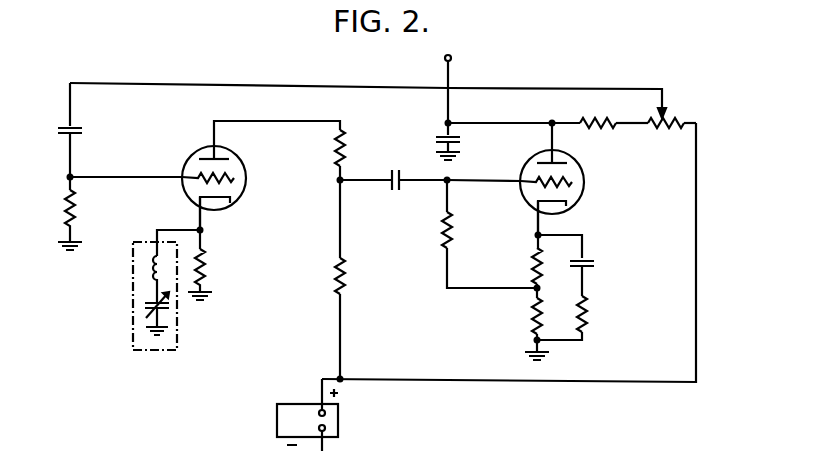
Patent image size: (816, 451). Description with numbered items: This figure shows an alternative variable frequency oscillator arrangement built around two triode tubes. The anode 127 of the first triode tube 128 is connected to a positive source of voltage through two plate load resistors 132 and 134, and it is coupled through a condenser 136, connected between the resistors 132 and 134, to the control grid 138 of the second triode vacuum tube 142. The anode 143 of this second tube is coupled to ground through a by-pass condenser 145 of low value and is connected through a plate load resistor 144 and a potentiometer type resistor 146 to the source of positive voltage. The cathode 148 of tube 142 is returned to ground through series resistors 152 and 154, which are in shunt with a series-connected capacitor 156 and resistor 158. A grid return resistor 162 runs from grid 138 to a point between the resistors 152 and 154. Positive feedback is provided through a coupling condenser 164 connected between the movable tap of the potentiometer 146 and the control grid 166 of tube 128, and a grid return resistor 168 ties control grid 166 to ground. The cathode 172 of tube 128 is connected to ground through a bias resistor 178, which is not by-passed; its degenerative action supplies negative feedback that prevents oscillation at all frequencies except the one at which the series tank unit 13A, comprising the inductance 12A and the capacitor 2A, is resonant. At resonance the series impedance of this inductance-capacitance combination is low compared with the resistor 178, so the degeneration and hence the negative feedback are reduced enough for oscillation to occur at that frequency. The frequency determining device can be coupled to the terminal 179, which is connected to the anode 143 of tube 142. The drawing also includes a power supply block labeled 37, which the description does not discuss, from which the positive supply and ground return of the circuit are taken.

The terminal 179 is at (452, 55).
The coupling condenser 164 is at (85, 131).
The grid return resistor 168 is at (78, 208).
The triode tube 128 is at (247, 178).
The anode 127 is at (221, 157).
The control grid 166 is at (197, 177).
The cathode 172 is at (220, 200).
The bias resistor 178 is at (206, 272).
The series tank unit 13A is at (131, 341).
The inductance 12A is at (150, 270).
The capacitor 2A is at (145, 306).
The plate load resistor 132 is at (346, 140).
The plate load resistor 134 is at (345, 268).
The condenser 136 is at (392, 196).
The by-pass condenser 145 is at (437, 141).
The grid return resistor 162 is at (452, 226).
The plate load resistor 144 is at (598, 121).
The potentiometer type resistor 146 is at (670, 130).
The triode vacuum tube 142 is at (585, 181).
The anode 143 is at (568, 163).
The control grid 138 is at (540, 181).
The cathode 148 is at (565, 204).
The resistor 152 is at (534, 258).
The resistor 154 is at (533, 306).
The capacitor 156 is at (596, 266).
The resistor 158 is at (588, 320).
The power supply 37 is at (276, 418).